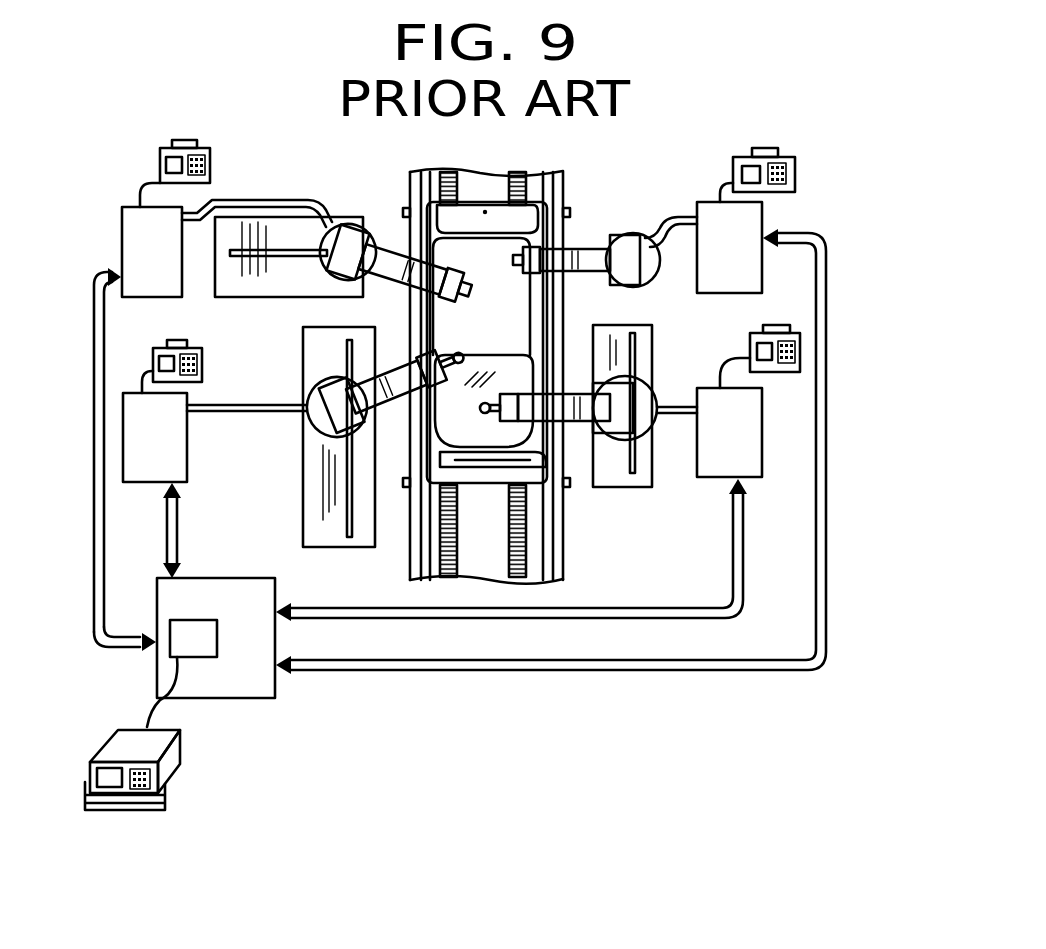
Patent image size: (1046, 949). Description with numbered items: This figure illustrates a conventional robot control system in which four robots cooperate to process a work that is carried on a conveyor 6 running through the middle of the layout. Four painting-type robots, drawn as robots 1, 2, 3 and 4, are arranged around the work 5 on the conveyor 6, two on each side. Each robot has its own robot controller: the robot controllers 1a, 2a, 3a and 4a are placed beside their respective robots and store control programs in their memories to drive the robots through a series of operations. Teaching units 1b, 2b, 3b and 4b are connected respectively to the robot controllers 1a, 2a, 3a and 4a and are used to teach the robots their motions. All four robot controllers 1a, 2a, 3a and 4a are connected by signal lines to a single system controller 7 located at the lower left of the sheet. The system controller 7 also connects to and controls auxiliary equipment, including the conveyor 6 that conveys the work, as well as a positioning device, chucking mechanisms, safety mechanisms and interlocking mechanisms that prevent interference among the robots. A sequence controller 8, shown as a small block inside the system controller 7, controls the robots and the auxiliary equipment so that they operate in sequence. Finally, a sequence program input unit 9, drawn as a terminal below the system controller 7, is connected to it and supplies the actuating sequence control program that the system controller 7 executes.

The work 1 is at (372, 222).
The robot controller 1a is at (119, 228).
The teaching unit 1b is at (211, 163).
The second painting robot 2 is at (627, 234).
The robot controller 2a is at (763, 207).
The teaching unit 2b is at (796, 169).
The third painting robot 3 is at (317, 427).
The robot controller 3a is at (187, 450).
The teaching unit 3b is at (203, 363).
The fourth painting robot 4 is at (620, 437).
The robot controller 4a is at (793, 435).
The teaching unit 4b is at (800, 355).
The vehicle body (workpiece) 5 is at (475, 247).
The conveyor 6 is at (528, 212).
The system controller 7 is at (242, 685).
The sequence controller 8 is at (169, 621).
The sequence program input unit 9 is at (173, 765).